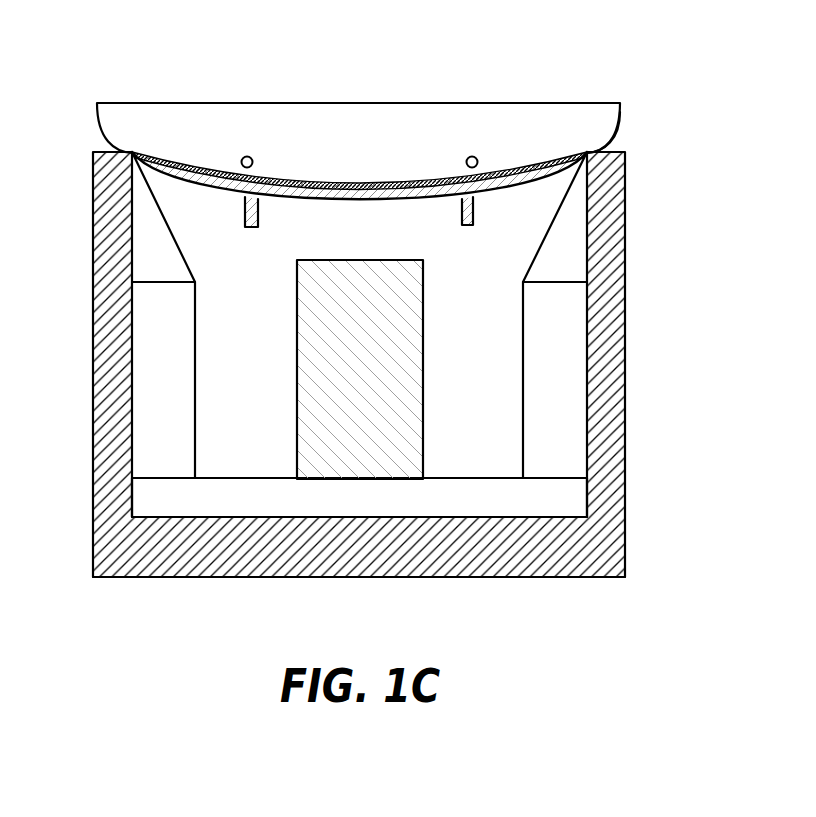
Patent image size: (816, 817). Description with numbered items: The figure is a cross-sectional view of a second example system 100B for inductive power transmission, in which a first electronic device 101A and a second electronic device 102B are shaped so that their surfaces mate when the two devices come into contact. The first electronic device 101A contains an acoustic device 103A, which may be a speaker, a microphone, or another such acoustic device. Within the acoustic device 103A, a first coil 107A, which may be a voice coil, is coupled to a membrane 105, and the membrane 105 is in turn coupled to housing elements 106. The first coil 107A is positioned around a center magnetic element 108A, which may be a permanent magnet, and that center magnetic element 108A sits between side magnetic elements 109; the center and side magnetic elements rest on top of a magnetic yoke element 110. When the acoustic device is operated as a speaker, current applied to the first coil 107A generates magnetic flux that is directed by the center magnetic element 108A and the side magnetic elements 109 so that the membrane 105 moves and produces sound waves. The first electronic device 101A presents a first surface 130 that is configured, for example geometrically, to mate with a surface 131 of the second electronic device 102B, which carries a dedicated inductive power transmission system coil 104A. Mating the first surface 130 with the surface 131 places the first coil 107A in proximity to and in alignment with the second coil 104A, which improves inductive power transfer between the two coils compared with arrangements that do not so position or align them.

The second example system 100B is at (108, 40).
The first electronic device 101A is at (627, 287).
The second electronic device 102B is at (579, 113).
The acoustic device 103A is at (573, 522).
The dedicated inductive power transmission system coil 104A is at (246, 156).
The membrane 105 is at (540, 170).
The housing elements 106 is at (147, 230).
The first coil 107A is at (473, 205).
The center magnetic element 108A is at (400, 360).
The side magnetic elements 109 is at (147, 362).
The magnetic yoke element 110 is at (572, 498).
The first surface 130 is at (584, 156).
The surface 131 is at (613, 137).